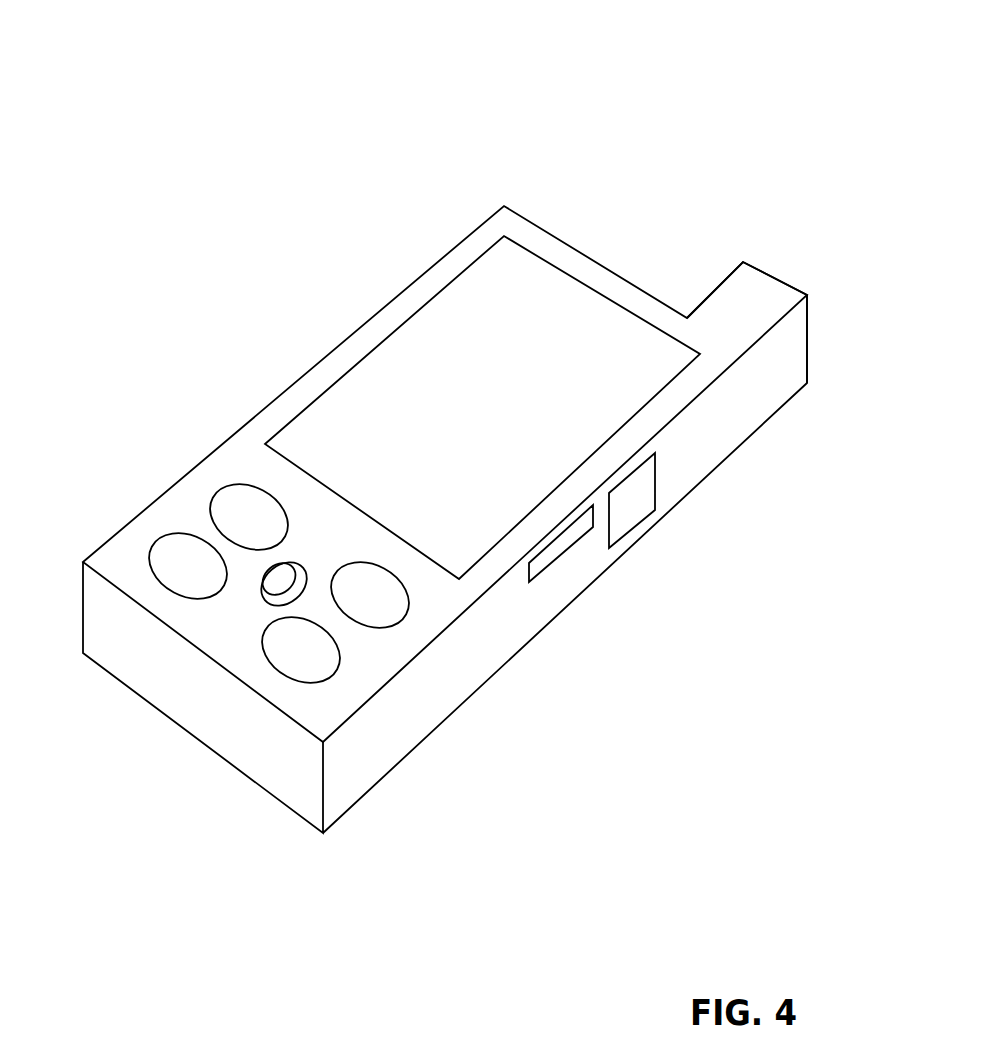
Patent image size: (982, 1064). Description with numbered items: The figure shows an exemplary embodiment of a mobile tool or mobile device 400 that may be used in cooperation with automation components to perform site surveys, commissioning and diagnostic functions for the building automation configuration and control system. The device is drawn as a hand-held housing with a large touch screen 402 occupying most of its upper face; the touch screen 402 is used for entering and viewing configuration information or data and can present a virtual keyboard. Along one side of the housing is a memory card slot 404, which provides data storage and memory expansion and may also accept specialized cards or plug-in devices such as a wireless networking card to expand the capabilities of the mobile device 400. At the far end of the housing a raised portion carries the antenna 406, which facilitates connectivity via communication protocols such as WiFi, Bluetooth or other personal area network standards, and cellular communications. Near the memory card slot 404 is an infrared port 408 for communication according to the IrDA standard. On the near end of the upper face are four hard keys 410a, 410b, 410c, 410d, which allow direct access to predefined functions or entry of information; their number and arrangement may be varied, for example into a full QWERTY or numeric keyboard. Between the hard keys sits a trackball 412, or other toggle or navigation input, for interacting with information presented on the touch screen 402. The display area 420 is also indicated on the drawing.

The mobile device 400 is at (649, 76).
The touch screen 402 is at (583, 282).
The memory card slot 404 is at (540, 580).
The antenna 406 is at (770, 273).
The infrared port 408 is at (650, 512).
The hard key 410a is at (323, 675).
The hard key 410b is at (402, 618).
The hard key 410c is at (175, 535).
The hard key 410d is at (237, 483).
The trackball 412 is at (262, 600).
The display screen 420 is at (518, 243).